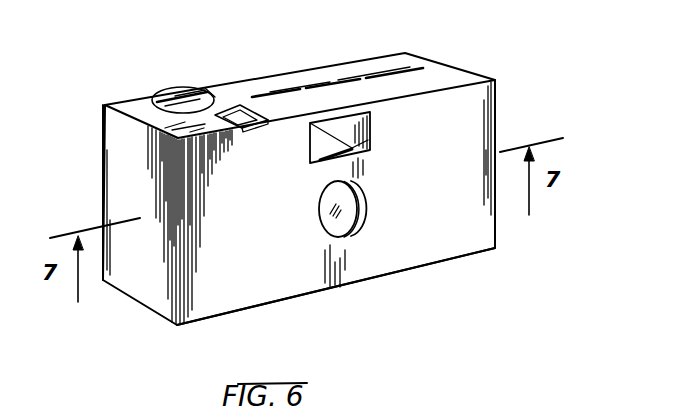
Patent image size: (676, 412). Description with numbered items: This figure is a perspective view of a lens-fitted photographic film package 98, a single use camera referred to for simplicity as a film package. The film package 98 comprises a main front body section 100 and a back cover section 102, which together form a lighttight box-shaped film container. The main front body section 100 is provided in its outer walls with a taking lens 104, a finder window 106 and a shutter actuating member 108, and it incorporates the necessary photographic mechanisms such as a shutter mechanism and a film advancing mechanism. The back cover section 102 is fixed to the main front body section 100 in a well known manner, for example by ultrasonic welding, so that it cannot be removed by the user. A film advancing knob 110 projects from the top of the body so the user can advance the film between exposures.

The lens-fitted photographic film package 98 is at (459, 64).
The main front body section 100 is at (250, 300).
The back cover section 102 is at (102, 218).
The taking lens 104 is at (327, 213).
The finder window 106 is at (372, 137).
The shutter actuating member 108 is at (237, 108).
The film advancing knob 110 is at (172, 102).